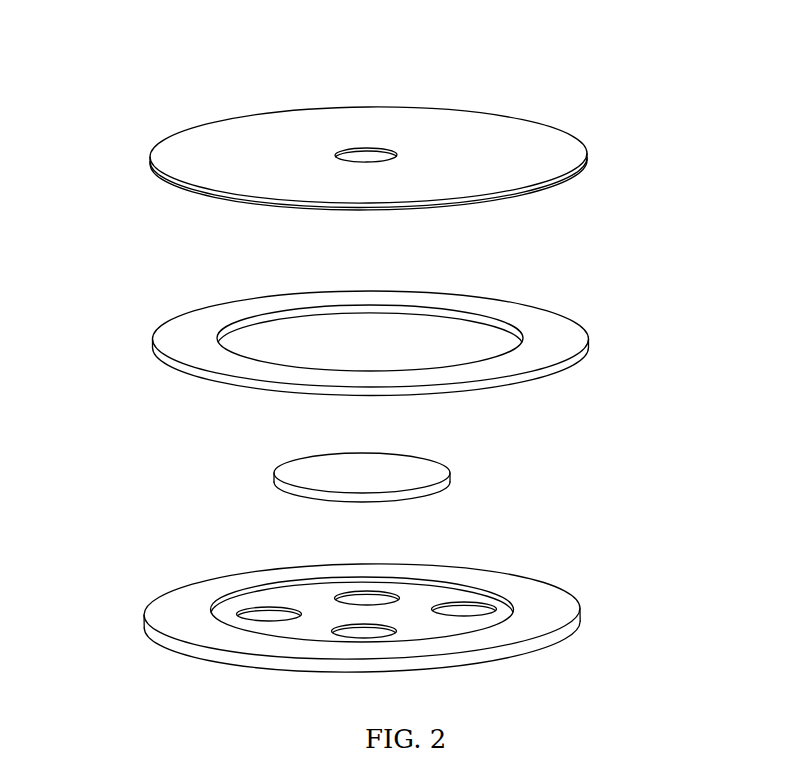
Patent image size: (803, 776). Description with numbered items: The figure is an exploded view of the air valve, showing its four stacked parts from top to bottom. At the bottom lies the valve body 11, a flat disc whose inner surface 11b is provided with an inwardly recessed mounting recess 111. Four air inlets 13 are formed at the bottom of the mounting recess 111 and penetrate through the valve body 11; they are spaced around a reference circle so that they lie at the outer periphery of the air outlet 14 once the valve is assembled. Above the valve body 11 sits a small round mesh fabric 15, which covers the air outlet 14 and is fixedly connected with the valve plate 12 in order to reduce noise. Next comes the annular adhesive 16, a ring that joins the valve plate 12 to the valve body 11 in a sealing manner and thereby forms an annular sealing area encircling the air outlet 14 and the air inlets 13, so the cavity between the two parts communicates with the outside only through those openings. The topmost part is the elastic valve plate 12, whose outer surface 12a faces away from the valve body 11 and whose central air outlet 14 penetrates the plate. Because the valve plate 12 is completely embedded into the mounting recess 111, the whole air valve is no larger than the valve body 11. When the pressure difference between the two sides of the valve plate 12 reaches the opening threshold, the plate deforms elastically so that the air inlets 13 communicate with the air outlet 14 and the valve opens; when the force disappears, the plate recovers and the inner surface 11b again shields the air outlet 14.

The valve body 11 is at (401, 616).
The inner surface of the valve body 11b is at (188, 617).
The mounting recess 111 is at (298, 597).
The air inlet 13 is at (470, 610).
The mesh fabric 15 is at (422, 468).
The annular adhesive 16 is at (556, 338).
The valve plate 12 is at (441, 121).
The outer surface of the valve plate 12a is at (478, 132).
The air outlet 14 is at (367, 157).